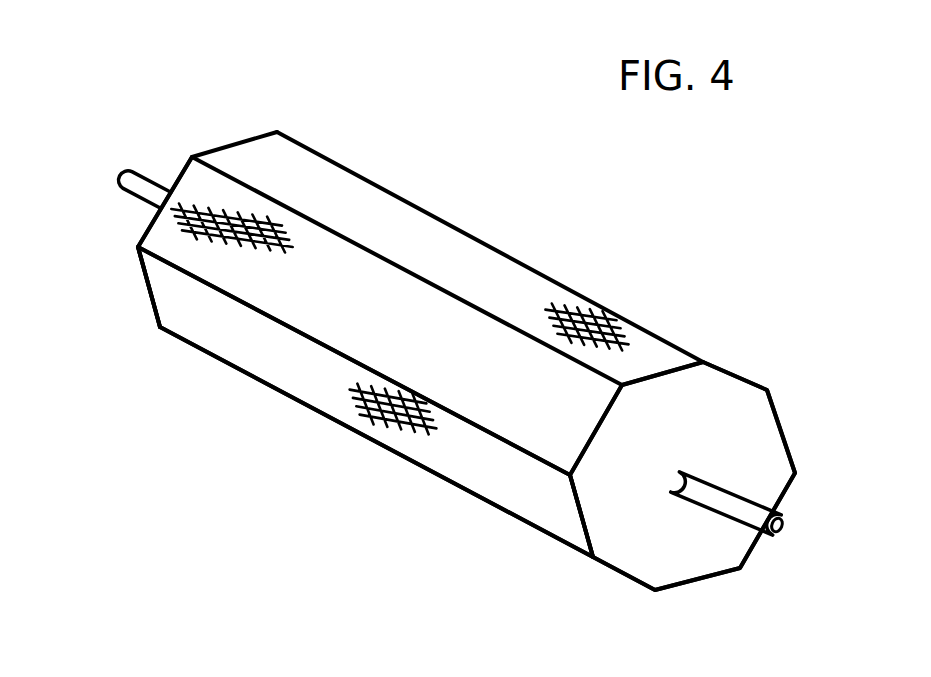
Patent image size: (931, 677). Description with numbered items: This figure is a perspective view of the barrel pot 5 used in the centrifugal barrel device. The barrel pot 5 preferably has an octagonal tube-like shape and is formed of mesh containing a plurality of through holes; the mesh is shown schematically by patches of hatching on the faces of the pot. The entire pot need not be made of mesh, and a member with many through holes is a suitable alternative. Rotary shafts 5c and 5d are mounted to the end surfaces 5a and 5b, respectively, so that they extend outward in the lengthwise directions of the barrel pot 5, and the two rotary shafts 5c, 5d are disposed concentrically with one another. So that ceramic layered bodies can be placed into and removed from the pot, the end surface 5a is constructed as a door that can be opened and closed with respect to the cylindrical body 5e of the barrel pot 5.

The barrel pot 5 is at (468, 218).
The end surface 5a is at (150, 292).
The end surface 5b is at (731, 407).
The rotary shaft 5c is at (147, 183).
The rotary shaft 5d is at (788, 530).
The cylindrical body 5e is at (430, 473).